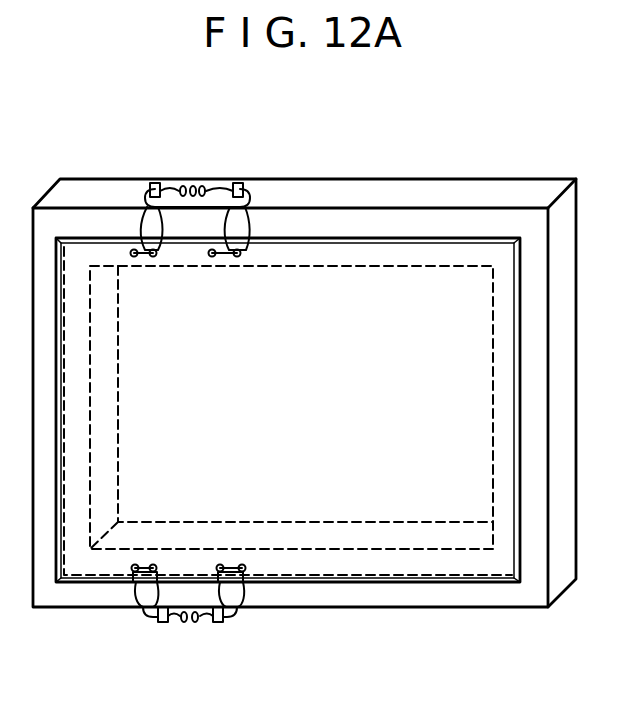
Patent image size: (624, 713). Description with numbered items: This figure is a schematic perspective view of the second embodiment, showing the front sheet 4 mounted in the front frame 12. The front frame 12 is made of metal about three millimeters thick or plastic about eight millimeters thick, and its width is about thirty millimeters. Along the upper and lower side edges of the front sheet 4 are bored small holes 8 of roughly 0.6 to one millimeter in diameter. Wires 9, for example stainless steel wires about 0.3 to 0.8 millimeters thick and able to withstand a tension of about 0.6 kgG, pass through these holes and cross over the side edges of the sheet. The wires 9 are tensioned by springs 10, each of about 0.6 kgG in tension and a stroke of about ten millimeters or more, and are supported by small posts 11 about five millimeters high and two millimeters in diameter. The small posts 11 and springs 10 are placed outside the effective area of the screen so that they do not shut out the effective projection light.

The front sheet 4 is at (462, 237).
The small holes 8 is at (212, 257).
The wires 9 is at (139, 258).
The springs 10 is at (190, 184).
The small posts 11 is at (155, 183).
The front frame 12 is at (548, 180).